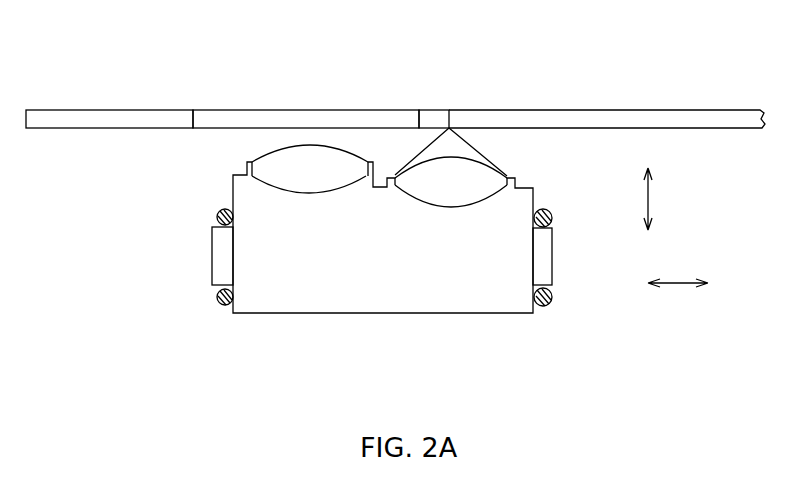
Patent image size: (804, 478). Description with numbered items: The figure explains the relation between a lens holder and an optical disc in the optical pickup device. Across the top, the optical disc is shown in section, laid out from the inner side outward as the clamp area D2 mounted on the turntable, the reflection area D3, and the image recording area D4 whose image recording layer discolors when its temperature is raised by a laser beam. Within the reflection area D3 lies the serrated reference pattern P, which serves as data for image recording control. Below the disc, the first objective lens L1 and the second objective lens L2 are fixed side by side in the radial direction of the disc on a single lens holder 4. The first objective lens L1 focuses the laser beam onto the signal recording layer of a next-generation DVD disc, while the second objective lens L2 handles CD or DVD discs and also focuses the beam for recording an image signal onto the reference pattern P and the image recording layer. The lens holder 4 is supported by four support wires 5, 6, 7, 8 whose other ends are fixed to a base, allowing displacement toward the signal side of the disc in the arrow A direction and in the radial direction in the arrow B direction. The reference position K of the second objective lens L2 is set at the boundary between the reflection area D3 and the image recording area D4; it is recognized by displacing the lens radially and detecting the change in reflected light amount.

The clamp area D2 is at (135, 108).
The reflection area D3 is at (342, 108).
The reference pattern P is at (433, 118).
The image recording area D4 is at (634, 118).
The reference position K is at (449, 128).
The first objective lens L1 is at (255, 160).
The second objective lens L2 is at (488, 178).
The lens holder 4 is at (337, 288).
The support wire 5 is at (552, 215).
The support wire 6 is at (552, 298).
The support wire 7 is at (215, 217).
The support wire 8 is at (215, 300).
The arrow A direction A is at (658, 199).
The arrow B direction B is at (678, 297).